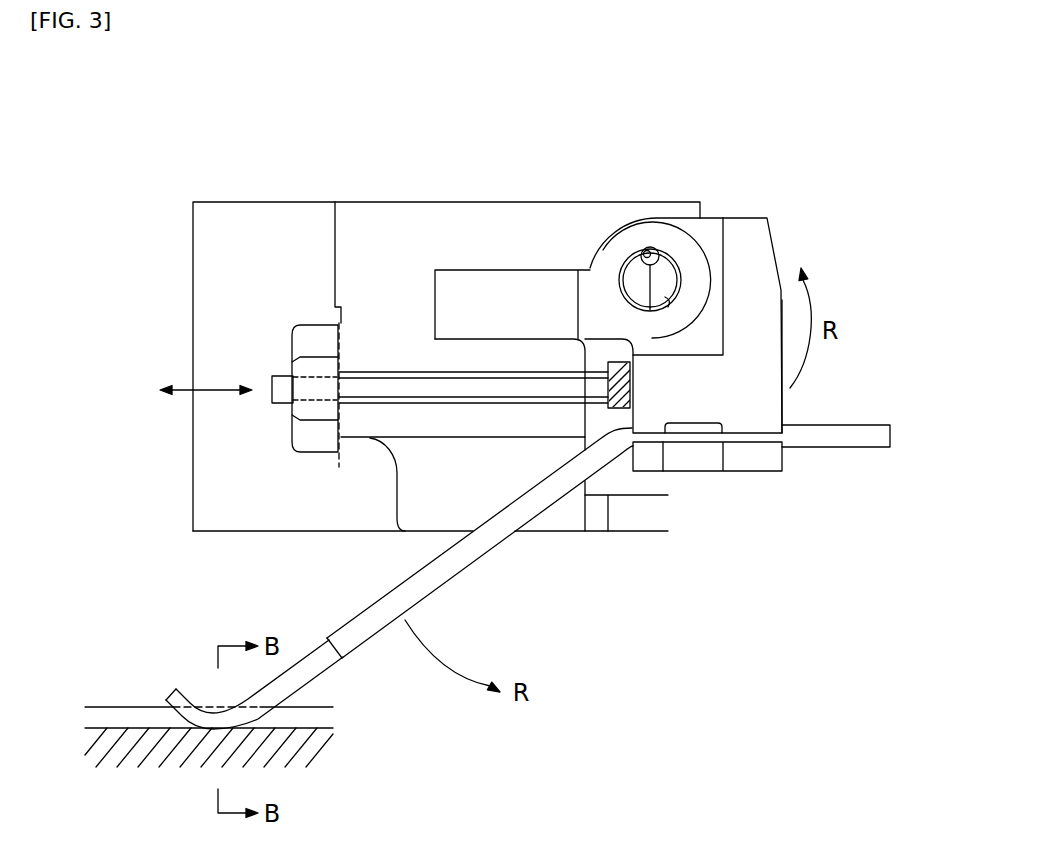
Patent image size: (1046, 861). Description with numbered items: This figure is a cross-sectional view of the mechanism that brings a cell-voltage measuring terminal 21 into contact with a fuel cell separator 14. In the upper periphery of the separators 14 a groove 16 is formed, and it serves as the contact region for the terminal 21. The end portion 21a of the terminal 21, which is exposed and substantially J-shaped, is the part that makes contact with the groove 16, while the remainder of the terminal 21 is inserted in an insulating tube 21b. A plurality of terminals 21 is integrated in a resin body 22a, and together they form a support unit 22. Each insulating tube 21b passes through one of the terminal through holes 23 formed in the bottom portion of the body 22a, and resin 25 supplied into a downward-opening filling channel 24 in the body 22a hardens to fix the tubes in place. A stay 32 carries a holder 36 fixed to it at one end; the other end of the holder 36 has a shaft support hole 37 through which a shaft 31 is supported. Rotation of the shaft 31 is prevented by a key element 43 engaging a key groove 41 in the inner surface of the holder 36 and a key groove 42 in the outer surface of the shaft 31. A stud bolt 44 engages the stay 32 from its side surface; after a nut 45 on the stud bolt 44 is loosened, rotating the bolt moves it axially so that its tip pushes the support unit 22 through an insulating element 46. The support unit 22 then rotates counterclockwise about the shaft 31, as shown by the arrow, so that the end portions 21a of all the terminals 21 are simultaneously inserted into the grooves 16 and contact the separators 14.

The separator 14 is at (97, 728).
The groove 16 is at (124, 715).
The terminal 21 is at (385, 620).
The end portion 21a is at (190, 716).
The insulating tube 21b is at (473, 553).
The support unit 22 is at (790, 241).
The body 22a is at (763, 410).
The terminal through hole 23 is at (770, 440).
The filling channel 24 is at (715, 458).
The resin 25 is at (694, 460).
The shaft 31 is at (662, 272).
The stay 32 is at (378, 204).
The holder 36 is at (505, 280).
The shaft support hole 37 is at (688, 305).
The key groove 41 is at (654, 249).
The key groove 42 is at (641, 253).
The key element 43 is at (650, 310).
The stud bolt 44 is at (372, 392).
The nut 45 is at (313, 334).
The insulating element 46 is at (607, 405).